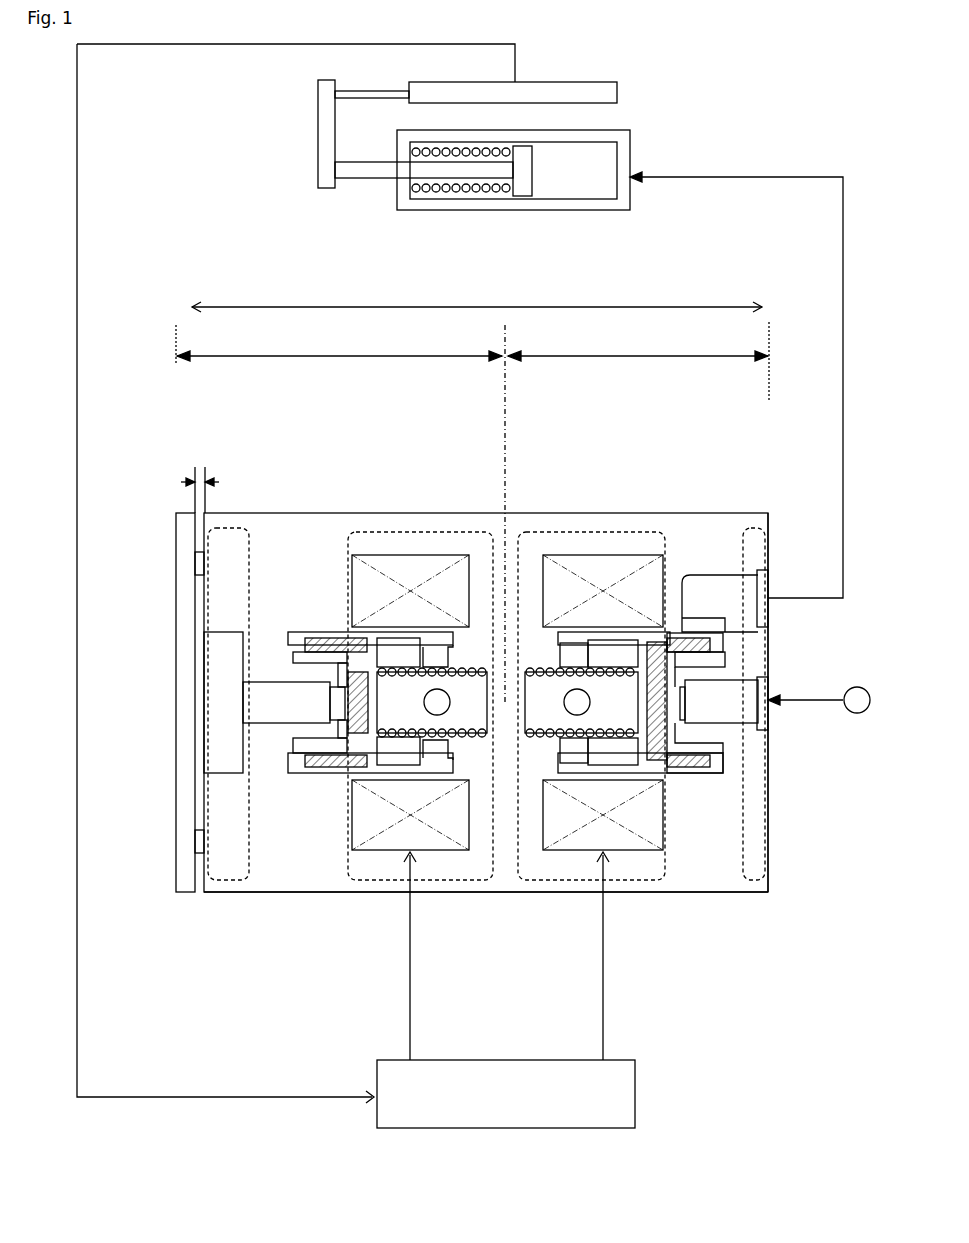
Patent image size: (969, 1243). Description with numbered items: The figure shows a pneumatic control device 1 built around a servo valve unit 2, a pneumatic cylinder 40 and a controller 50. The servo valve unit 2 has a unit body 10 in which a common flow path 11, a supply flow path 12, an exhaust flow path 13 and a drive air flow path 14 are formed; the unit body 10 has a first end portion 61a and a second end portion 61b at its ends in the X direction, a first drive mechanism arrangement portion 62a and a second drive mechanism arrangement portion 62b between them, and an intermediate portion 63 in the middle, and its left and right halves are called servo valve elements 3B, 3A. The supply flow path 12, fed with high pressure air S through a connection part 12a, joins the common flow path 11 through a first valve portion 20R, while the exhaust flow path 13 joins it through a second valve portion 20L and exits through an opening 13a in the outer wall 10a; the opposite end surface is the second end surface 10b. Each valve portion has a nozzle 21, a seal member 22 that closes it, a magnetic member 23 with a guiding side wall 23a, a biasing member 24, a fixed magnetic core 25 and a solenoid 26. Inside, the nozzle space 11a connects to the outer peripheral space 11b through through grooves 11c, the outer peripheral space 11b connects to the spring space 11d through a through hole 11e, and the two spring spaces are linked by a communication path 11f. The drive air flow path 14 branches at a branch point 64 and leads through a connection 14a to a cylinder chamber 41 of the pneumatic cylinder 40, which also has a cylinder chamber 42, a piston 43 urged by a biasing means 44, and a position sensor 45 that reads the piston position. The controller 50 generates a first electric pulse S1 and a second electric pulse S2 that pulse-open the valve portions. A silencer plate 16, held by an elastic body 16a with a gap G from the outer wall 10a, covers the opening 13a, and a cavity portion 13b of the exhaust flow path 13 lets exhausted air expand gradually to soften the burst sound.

The pneumatic control device 1 is at (795, 66).
The servo valve unit 2 is at (396, 462).
The servo valve element 3A is at (638, 346).
The servo valve element 3B is at (339, 346).
The unit body 10 is at (297, 530).
The outer wall 10a is at (770, 893).
The second end surface 10b is at (200, 890).
The common flow path 11 is at (493, 735).
The nozzle space 11a is at (337, 655).
The outer peripheral space 11b is at (636, 660).
The through groove 11c is at (688, 655).
The spring space 11d is at (538, 690).
The through hole 11e is at (578, 652).
The communication path 11f is at (502, 560).
The supply flow path 12 is at (745, 718).
The connection part 12a is at (772, 720).
The exhaust flow path 13 is at (219, 808).
The opening 13a is at (205, 767).
The cavity portion 13b is at (230, 678).
The drive air flow path 14 is at (752, 575).
The connection 14a is at (775, 605).
The silencer plate 16 is at (175, 527).
The elastic body 16a is at (197, 563).
The second valve portion 20L is at (338, 875).
The first valve portion 20R is at (580, 720).
The nozzle 21 is at (697, 802).
The seal member 22 is at (663, 760).
The magnetic member 23 is at (650, 767).
The side wall 23a is at (672, 740).
The biasing member 24 is at (580, 742).
The fixed magnetic core 25 is at (625, 755).
The solenoid 26 is at (598, 570).
The pneumatic cylinder 40 is at (296, 152).
The cylinder chamber 41 is at (576, 192).
The cylinder chamber 42 is at (477, 192).
The piston 43 is at (521, 197).
The biasing means 44 is at (426, 194).
The position sensor 45 is at (612, 92).
The controller 50 is at (501, 1146).
The first end portion 61a is at (748, 560).
The second end portion 61b is at (240, 520).
The first drive mechanism arrangement portion 62a is at (645, 532).
The second drive mechanism arrangement portion 62b is at (420, 532).
The intermediate portion 63 is at (509, 545).
The branch point 64 is at (703, 617).
The gap G is at (182, 490).
The high pressure air S is at (819, 700).
The first electric pulse S1 is at (585, 956).
The second electric pulse S2 is at (390, 956).
The X direction X is at (472, 494).